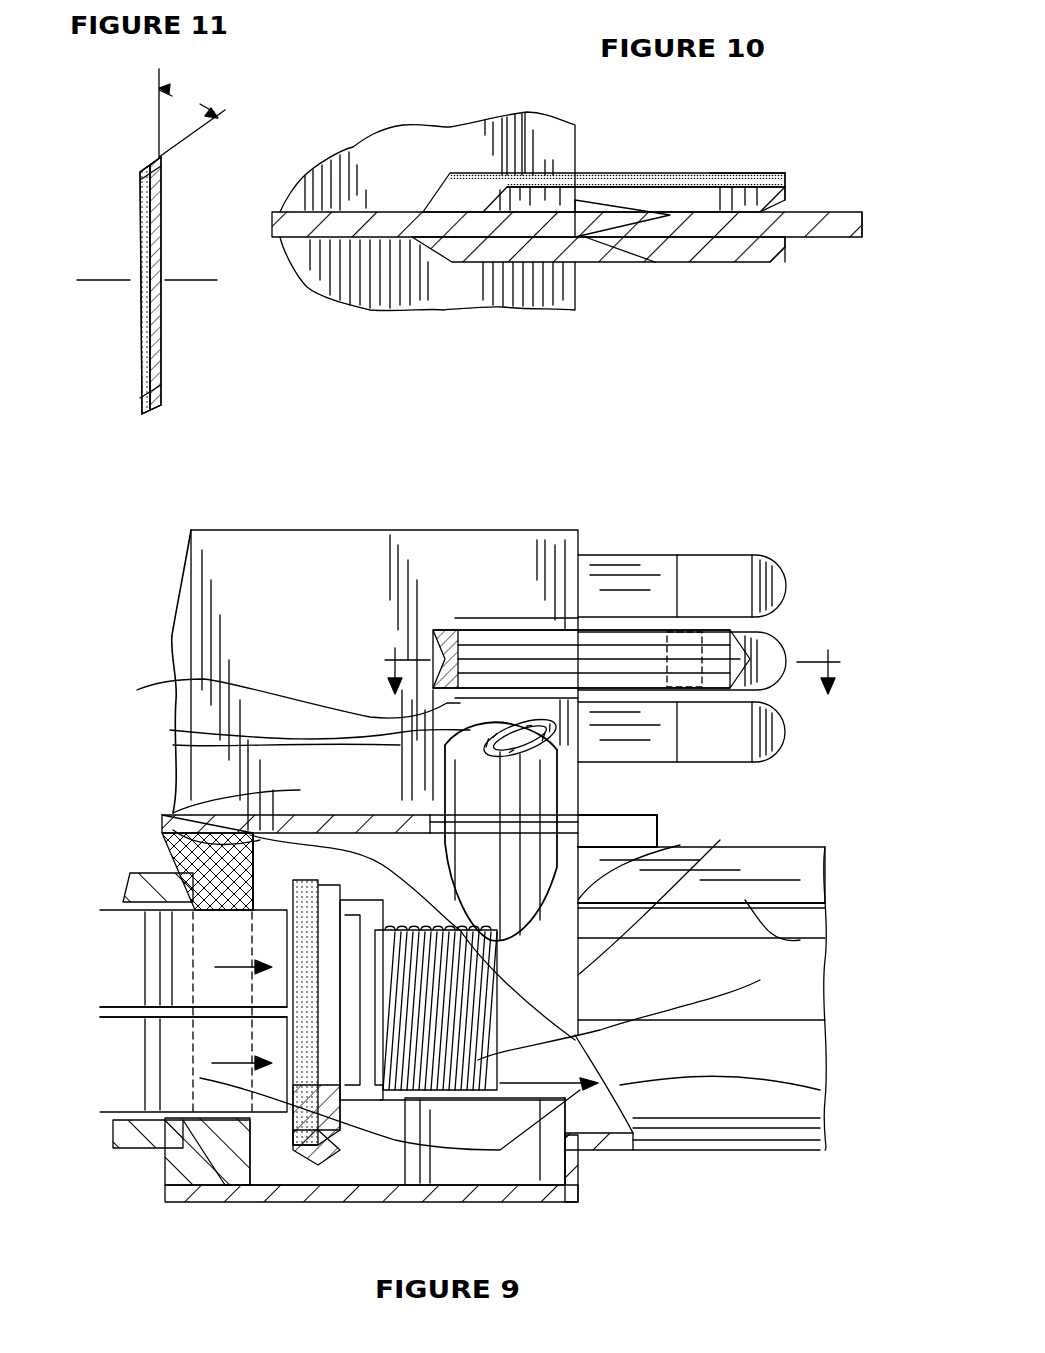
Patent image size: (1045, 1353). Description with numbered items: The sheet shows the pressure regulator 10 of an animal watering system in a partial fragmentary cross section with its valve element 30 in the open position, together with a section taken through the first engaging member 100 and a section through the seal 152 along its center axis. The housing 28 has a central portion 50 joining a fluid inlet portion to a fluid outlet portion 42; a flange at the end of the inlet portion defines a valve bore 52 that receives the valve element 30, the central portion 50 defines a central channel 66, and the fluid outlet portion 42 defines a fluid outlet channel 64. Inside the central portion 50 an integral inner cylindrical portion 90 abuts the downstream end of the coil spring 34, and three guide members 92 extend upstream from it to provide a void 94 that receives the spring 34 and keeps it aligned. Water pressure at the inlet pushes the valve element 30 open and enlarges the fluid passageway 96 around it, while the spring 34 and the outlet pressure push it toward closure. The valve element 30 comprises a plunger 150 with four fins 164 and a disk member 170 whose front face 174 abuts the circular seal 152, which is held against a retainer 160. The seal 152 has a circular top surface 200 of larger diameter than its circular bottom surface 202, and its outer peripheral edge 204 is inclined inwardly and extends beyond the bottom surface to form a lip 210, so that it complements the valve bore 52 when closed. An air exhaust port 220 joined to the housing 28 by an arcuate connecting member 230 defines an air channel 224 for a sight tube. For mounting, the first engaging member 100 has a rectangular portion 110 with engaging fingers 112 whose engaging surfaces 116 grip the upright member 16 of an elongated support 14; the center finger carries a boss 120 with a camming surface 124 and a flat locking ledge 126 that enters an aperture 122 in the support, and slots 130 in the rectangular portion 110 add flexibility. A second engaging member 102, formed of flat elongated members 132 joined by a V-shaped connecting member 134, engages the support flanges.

In FIG. 9, the pressure regulator 10 is at (748, 507).
In FIG. 10, the elongated support 14 is at (815, 210).
In FIG. 10, the upright member 16 is at (855, 212).
In FIG. 9, the housing 28 is at (490, 1207).
In FIG. 9, the valve element 30 is at (180, 874).
In FIG. 9, the coil spring 34 is at (640, 977).
In FIG. 9, the fluid outlet portion 42 is at (785, 1152).
In FIG. 9, the central portion 50 is at (312, 1192).
In FIG. 9, the valve bore 52 is at (235, 1197).
In FIG. 9, the fluid outlet channel 64 is at (780, 917).
In FIG. 9, the central channel 66 is at (385, 1192).
In FIG. 9, the inner cylindrical portion 90 is at (800, 987).
In FIG. 9, the guide member 92 is at (555, 1187).
In FIG. 9, the void 94 is at (450, 1182).
In FIG. 9, the fluid passageway 96 is at (175, 852).
In FIG. 10, the first engaging member 100 is at (490, 115).
In FIG. 9, the first engaging member 100 is at (480, 530).
In FIG. 9, the second engaging member 102 is at (750, 860).
In FIG. 10, the rectangular portion 110 is at (418, 162).
In FIG. 9, the rectangular portion 110 is at (304, 622).
In FIG. 10, the engaging finger 112 is at (738, 182).
In FIG. 9, the engaging finger 112 is at (785, 592).
In FIG. 10, the engaging surface 116 is at (755, 182).
In FIG. 9, the engaging surface 116 is at (720, 577).
In FIG. 10, the boss 120 is at (672, 186).
In FIG. 9, the boss 120 is at (650, 610).
In FIG. 10, the aperture 122 is at (718, 184).
In FIG. 10, the camming surface 124 is at (690, 250).
In FIG. 10, the flat locking ledge 126 is at (658, 250).
In FIG. 9, the slot 130 is at (495, 612).
In FIG. 9, the flat elongated member 132 is at (800, 947).
In FIG. 9, the V-shaped connecting member 134 is at (625, 824).
In FIG. 9, the plunger 150 is at (120, 917).
In FIG. 11, the circular seal 152 is at (165, 368).
In FIG. 9, the circular seal 152 is at (200, 857).
In FIG. 9, the retainer 160 is at (190, 820).
In FIG. 9, the fin 164 is at (215, 977).
In FIG. 9, the disk member 170 is at (250, 902).
In FIG. 9, the front face 174 is at (330, 942).
In FIG. 11, the circular top surface 200 is at (160, 335).
In FIG. 9, the circular top surface 200 is at (175, 797).
In FIG. 11, the circular bottom surface 202 is at (140, 226).
In FIG. 9, the circular bottom surface 202 is at (293, 1042).
In FIG. 11, the outer peripheral edge 204 is at (142, 166).
In FIG. 9, the outer peripheral edge 204 is at (165, 820).
In FIG. 11, the lip 210 is at (140, 174).
In FIG. 9, the lip 210 is at (305, 1152).
In FIG. 9, the air exhaust port 220 is at (545, 792).
In FIG. 9, the air channel 224 is at (240, 745).
In FIG. 9, the arcuate connecting member 230 is at (651, 891).